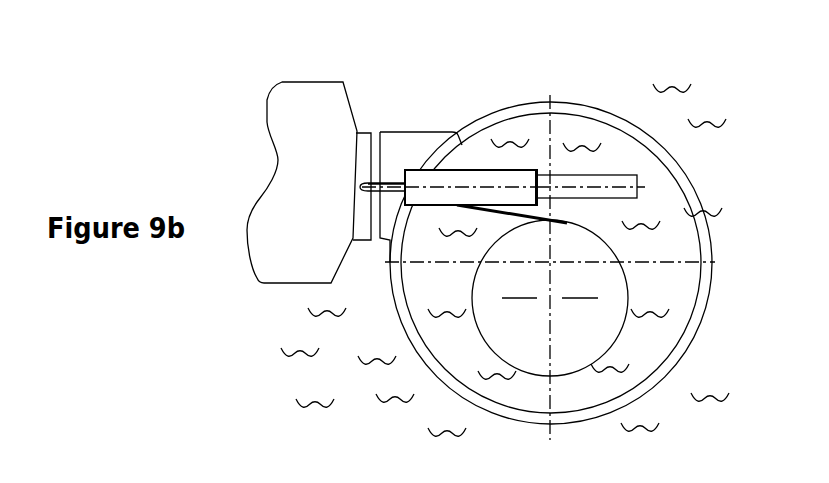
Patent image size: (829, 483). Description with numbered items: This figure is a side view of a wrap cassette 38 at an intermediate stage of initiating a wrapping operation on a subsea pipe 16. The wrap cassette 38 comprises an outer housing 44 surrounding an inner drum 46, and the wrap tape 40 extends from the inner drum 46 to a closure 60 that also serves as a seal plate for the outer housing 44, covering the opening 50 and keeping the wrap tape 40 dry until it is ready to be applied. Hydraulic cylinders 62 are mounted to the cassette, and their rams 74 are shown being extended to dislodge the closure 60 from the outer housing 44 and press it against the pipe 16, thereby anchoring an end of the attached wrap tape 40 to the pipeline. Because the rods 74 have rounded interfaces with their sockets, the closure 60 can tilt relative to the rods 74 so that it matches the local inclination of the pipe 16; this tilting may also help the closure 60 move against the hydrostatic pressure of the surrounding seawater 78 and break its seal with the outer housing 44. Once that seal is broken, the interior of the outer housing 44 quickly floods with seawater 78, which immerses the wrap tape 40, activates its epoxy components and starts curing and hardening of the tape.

The pipe 16 is at (303, 120).
The closure 60 is at (362, 138).
The opening 50 is at (378, 215).
The rams 74 is at (392, 185).
The hydraulic cylinders 62 is at (457, 180).
The outer housing 44 is at (588, 108).
The wrap tape 40 is at (493, 213).
The inner drum 46 is at (533, 372).
The wrap cassette 38 is at (594, 425).
The seawater 78 is at (672, 296).